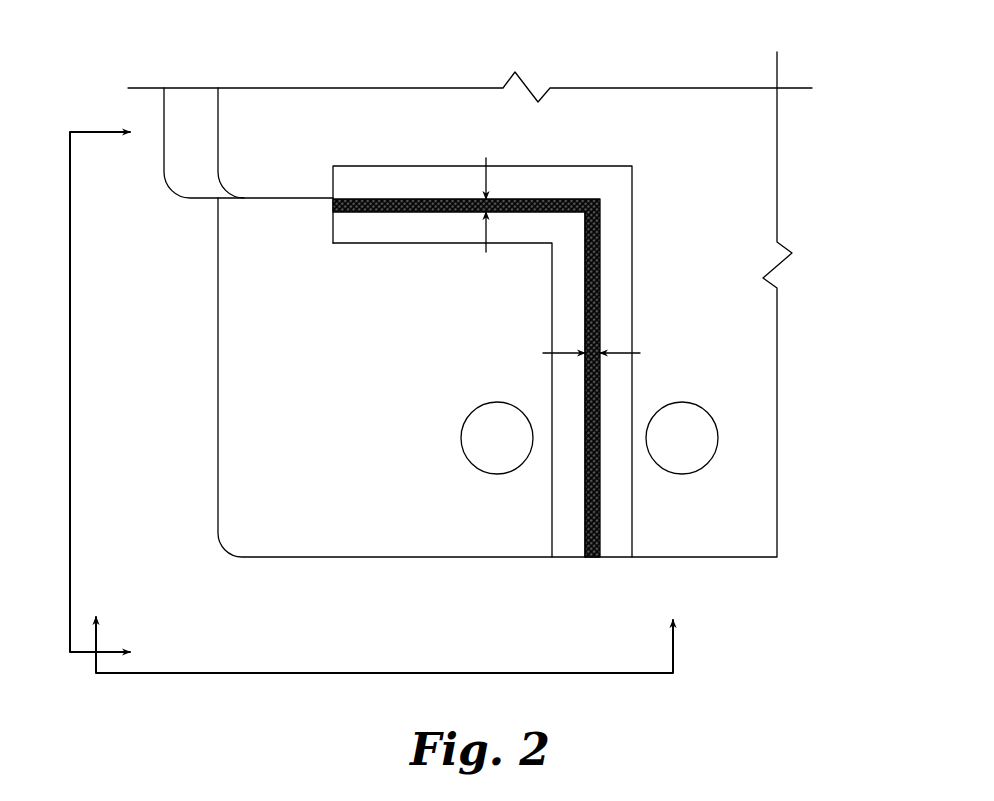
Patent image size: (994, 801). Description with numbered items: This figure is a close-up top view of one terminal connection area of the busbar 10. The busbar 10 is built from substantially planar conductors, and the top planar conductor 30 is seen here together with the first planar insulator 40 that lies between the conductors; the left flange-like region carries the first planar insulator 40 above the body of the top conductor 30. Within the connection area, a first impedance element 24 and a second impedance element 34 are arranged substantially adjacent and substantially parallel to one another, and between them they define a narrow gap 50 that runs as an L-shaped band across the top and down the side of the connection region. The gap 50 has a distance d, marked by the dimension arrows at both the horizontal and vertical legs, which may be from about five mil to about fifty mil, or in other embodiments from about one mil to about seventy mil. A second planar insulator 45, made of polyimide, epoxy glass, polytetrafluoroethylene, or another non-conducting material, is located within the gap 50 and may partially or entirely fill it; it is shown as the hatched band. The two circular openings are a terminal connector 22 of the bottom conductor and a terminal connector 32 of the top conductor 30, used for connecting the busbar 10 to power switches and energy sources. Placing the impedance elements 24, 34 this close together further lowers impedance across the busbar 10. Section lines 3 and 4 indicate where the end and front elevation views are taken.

The busbar 10 is at (728, 75).
The second planar conductor 30 is at (790, 378).
The first planar insulator 40 is at (209, 151).
The second impedance element 34 is at (382, 160).
The first impedance element 24 is at (360, 250).
The gap 50 is at (315, 207).
The second planar insulator 45 is at (577, 195).
The distance of the gap d is at (497, 198).
The terminal connector 22 is at (458, 422).
The terminal connector 32 is at (712, 402).
The section line 3- 3 is at (111, 393).
The section line 4- 4 is at (383, 630).